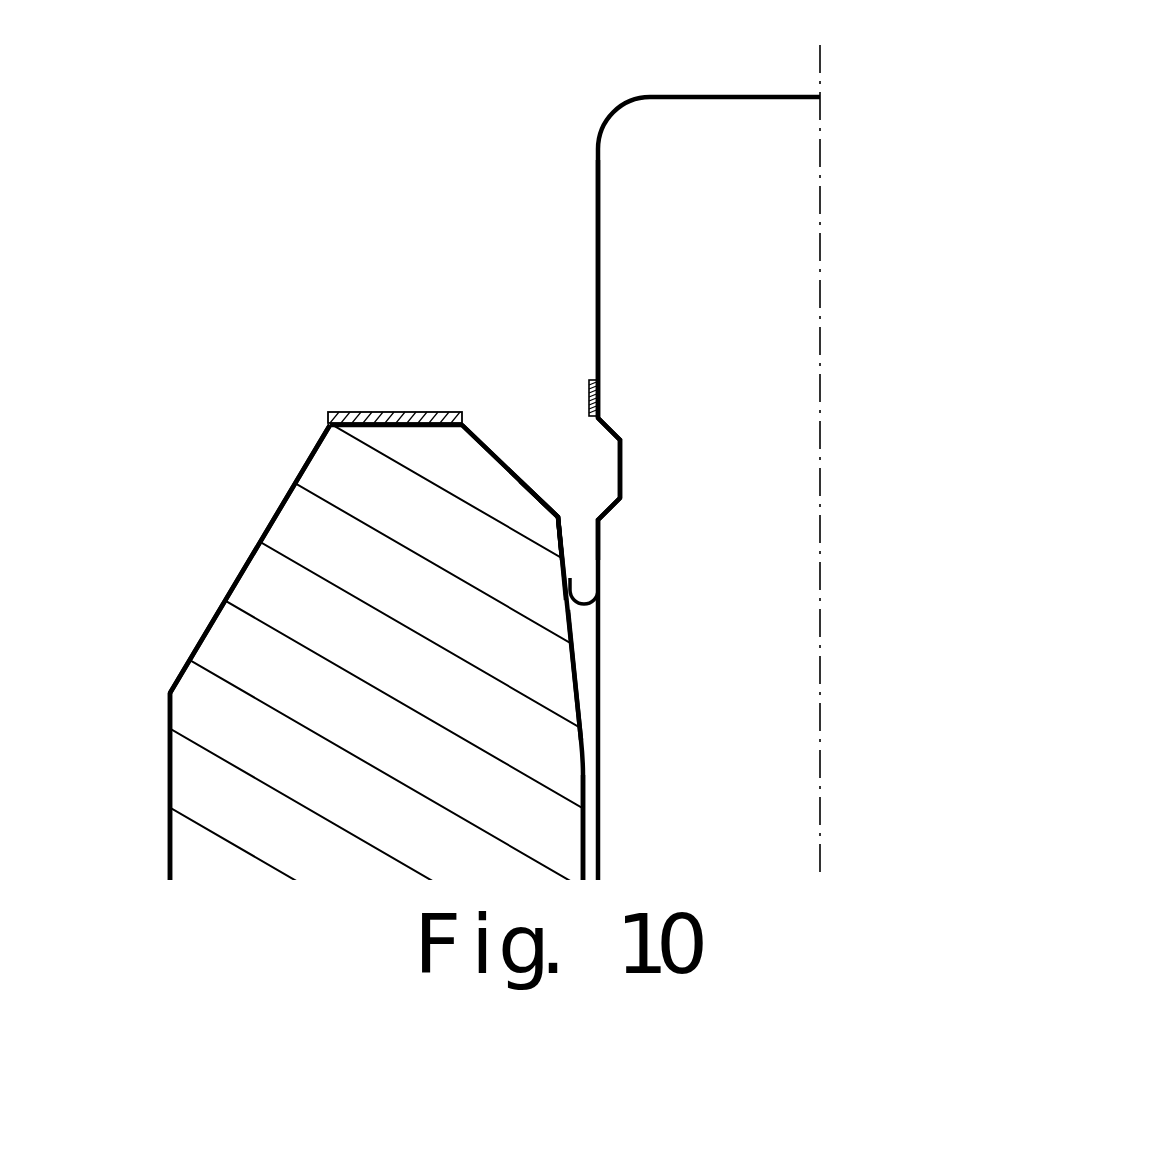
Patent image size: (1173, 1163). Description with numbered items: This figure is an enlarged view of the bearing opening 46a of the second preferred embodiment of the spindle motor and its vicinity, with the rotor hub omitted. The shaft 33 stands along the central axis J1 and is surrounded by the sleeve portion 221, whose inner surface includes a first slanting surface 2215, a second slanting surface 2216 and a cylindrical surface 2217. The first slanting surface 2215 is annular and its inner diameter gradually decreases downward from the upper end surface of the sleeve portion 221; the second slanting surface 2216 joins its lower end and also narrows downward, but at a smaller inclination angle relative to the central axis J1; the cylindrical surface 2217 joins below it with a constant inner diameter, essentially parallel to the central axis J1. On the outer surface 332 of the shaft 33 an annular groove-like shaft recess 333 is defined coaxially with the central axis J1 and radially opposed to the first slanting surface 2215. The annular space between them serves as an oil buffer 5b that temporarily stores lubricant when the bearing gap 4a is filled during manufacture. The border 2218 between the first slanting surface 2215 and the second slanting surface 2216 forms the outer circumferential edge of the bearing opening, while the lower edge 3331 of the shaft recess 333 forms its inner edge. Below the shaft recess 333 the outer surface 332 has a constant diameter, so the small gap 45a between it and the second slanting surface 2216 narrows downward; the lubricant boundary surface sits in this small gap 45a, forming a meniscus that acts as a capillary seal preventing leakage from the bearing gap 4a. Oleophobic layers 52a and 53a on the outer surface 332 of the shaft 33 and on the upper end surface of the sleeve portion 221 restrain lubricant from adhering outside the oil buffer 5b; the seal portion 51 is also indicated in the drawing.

The central axis J1 is at (820, 70).
The shaft 33 is at (722, 132).
The seal portion 51 is at (567, 416).
The oleophobic layer 52a is at (600, 402).
The shaft recess 333 is at (613, 450).
The lower edge of the shaft recess 3331 is at (601, 520).
The sleeve portion 221 is at (335, 440).
The oleophobic layer 53a is at (350, 412).
The first slanting surface 2215 is at (496, 425).
The oil buffer 5b is at (538, 464).
The border 2218 is at (556, 518).
The bearing opening 46a is at (584, 519).
The outer surface 332 is at (596, 583).
The small gap 45a is at (588, 625).
The second slanting surface 2216 is at (585, 668).
The bearing gap 4a is at (588, 792).
The cylindrical surface 2217 is at (588, 849).